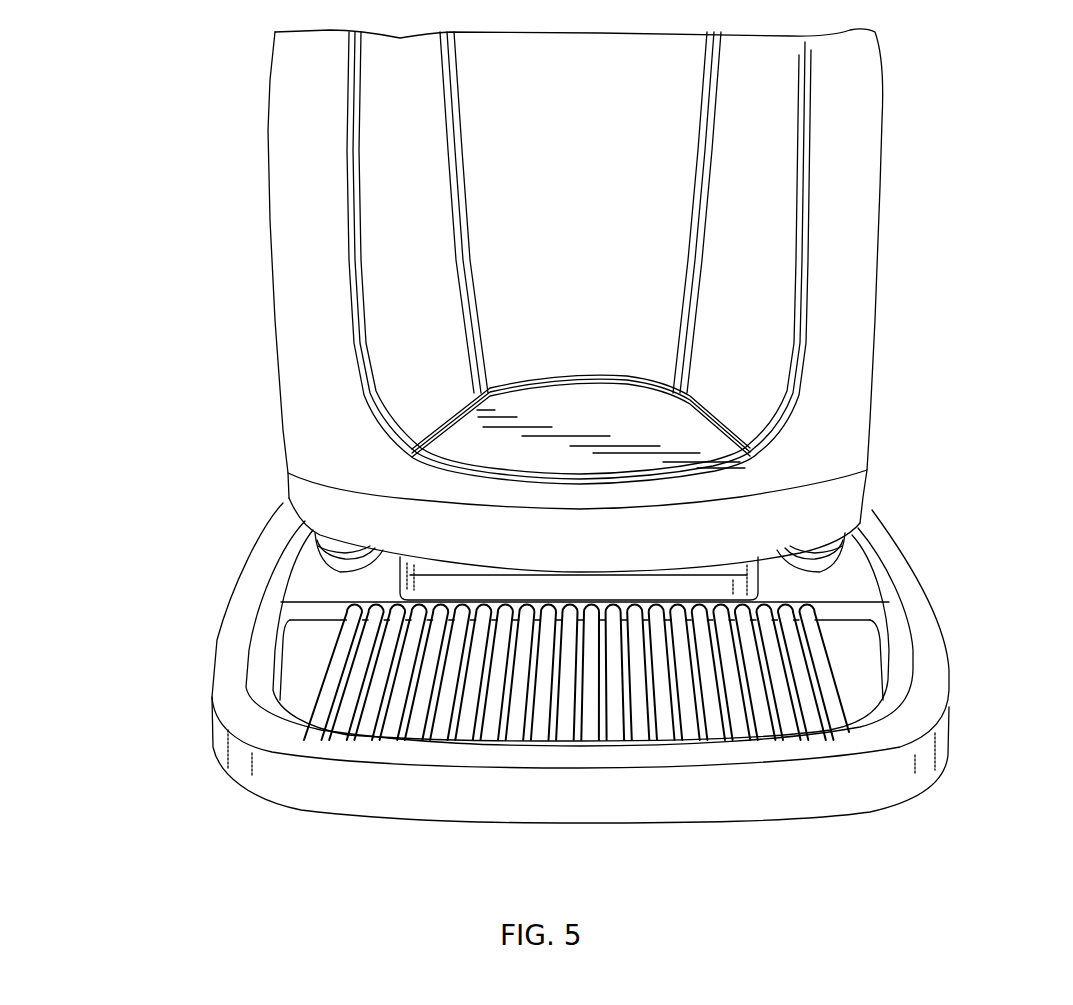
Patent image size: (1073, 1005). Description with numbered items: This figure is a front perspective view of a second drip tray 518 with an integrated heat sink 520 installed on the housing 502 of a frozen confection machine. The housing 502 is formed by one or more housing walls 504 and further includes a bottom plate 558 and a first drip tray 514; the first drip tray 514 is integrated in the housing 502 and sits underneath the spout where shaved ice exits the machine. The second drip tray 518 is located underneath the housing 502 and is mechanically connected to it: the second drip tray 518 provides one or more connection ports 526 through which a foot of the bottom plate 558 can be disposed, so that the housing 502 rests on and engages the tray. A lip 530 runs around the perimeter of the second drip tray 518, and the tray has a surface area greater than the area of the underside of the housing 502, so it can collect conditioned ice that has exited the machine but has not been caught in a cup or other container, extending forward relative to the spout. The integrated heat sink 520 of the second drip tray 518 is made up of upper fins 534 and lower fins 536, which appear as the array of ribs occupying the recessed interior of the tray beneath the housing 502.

The housing 502 is at (287, 202).
The housing wall 504 is at (320, 342).
The first drip tray 514 is at (593, 452).
The bottom plate 558 is at (290, 500).
The connection port 526 is at (318, 565).
The second drip tray 518 is at (225, 644).
The lip 530 is at (937, 668).
The integrated heat sink 520 is at (790, 658).
The lower fins 536 is at (338, 720).
The upper fins 534 is at (713, 713).